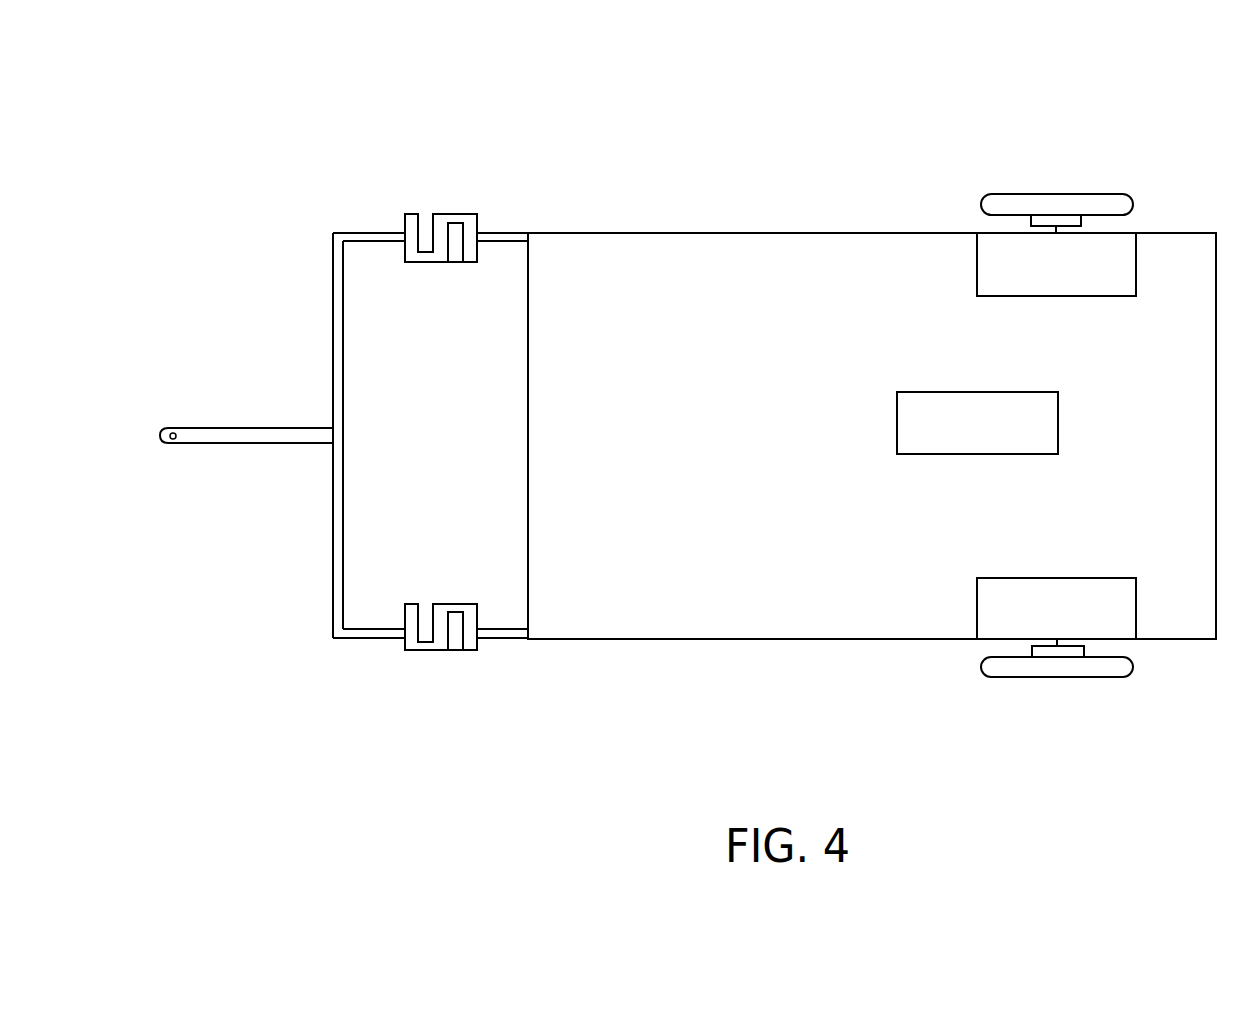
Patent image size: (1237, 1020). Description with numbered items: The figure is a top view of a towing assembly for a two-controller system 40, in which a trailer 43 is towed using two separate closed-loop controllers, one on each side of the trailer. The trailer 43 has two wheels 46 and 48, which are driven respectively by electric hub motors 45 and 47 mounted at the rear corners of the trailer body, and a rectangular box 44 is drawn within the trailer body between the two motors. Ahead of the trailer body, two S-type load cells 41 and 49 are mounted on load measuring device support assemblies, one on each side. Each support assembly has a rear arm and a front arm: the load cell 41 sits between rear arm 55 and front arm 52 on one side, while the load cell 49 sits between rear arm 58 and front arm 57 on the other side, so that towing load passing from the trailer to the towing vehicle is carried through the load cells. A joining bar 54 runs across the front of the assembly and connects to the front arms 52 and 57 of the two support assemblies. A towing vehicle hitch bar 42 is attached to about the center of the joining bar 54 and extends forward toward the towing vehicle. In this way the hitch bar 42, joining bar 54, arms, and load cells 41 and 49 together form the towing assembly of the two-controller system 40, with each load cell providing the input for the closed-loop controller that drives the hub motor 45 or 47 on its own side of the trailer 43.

The two-controller system 40 is at (278, 158).
The S-type load cell 41 is at (470, 227).
The towing vehicle hitch bar 42 is at (229, 438).
The trailer 43 is at (728, 253).
The battery box 44 is at (942, 415).
The electric hub motor 45 is at (1119, 253).
The wheel 46 is at (1038, 203).
The electric hub motor 47 is at (1119, 625).
The wheel 48 is at (1065, 667).
The S-type load cell 49 is at (439, 643).
The front arm 52 is at (365, 238).
The joining bar 54 is at (338, 362).
The rear arm 55 is at (500, 238).
The front arm 57 is at (368, 636).
The rear arm 58 is at (500, 637).